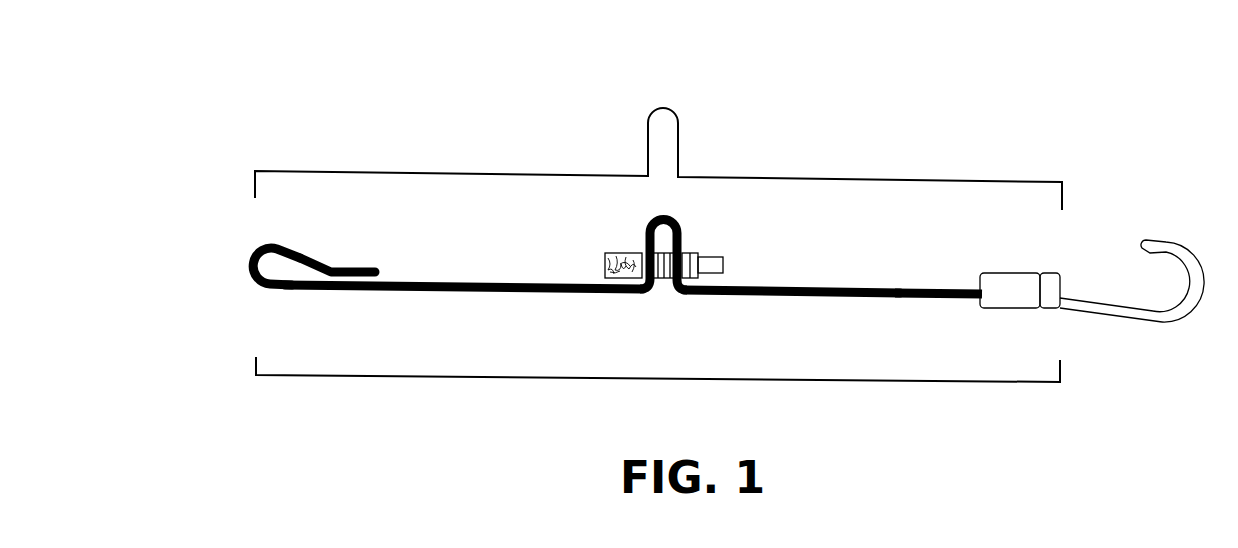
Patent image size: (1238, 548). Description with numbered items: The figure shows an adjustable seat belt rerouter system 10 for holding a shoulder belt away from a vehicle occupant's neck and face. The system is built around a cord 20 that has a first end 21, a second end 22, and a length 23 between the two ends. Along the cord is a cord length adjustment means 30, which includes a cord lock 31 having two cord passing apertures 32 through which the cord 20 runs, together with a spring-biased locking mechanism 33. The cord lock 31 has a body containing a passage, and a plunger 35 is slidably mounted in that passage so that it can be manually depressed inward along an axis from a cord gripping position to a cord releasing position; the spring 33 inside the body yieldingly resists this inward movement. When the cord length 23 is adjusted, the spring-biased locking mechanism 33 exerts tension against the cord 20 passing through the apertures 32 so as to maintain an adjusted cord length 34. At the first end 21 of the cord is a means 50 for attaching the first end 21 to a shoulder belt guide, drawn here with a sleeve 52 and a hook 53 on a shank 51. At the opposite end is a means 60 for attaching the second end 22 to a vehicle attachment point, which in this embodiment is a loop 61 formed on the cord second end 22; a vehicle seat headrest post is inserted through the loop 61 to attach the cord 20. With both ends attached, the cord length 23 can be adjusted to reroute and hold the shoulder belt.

The adjustable seat belt rerouter system 10 is at (1047, 110).
The cord 20 is at (497, 293).
The first end 21 is at (973, 303).
The second end 22 is at (368, 291).
The length 23 is at (483, 173).
The cord length adjustment means 30 is at (713, 240).
The cord lock 31 is at (687, 257).
The cord passing apertures 32 is at (670, 283).
The spring-biased locking mechanism 33 is at (610, 262).
The adjusted cord length 34 is at (833, 380).
The plunger 35 is at (721, 262).
The means for attaching the first end of the cord to the shoulder belt guide 50 is at (1108, 223).
The hook shank 51 is at (1098, 333).
The coupling sleeve 52 is at (1012, 300).
The hook 53 is at (1173, 316).
The means for attaching the second end of the cord to a vehicle attachment point 60 is at (240, 268).
The loop 61 is at (258, 248).